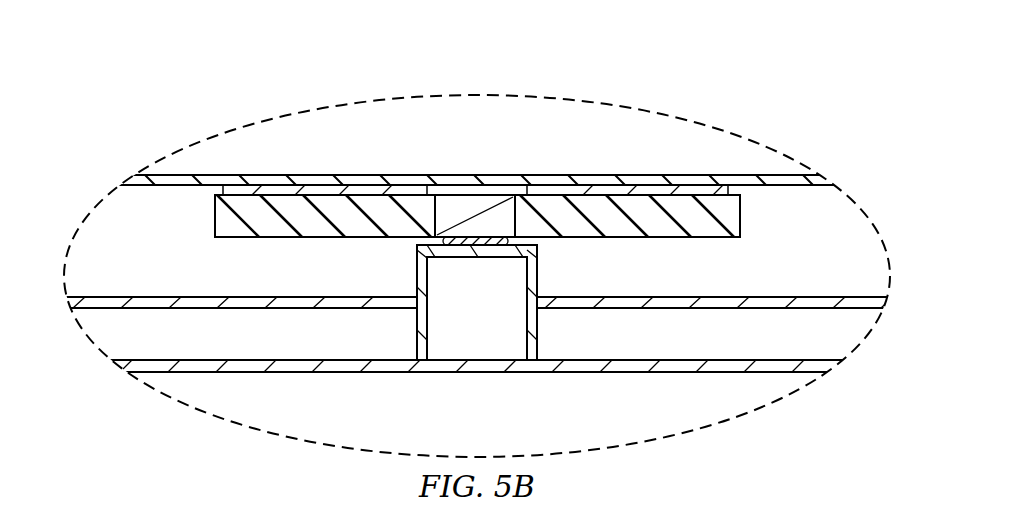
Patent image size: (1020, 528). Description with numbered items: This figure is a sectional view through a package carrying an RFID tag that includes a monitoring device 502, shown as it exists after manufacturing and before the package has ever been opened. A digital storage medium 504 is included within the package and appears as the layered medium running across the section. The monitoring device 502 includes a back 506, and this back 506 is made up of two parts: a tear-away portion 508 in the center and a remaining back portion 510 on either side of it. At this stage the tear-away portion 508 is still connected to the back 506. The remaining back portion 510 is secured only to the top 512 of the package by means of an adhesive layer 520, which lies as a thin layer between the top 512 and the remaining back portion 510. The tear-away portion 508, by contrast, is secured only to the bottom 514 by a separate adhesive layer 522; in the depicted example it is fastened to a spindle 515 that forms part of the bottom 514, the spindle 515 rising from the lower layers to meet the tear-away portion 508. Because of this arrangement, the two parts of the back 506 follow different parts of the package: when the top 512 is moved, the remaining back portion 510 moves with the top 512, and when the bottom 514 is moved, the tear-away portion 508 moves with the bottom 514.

The monitoring device 502 is at (198, 248).
The digital storage medium 504 is at (197, 299).
The back 506 is at (314, 242).
The tear-away portion 508 is at (490, 205).
The remaining back portion 510 is at (225, 224).
The top 512 is at (312, 183).
The bottom 514 is at (320, 359).
The spindle 515 is at (459, 325).
The adhesive layer 520 is at (233, 189).
The adhesive layer 522 is at (462, 240).